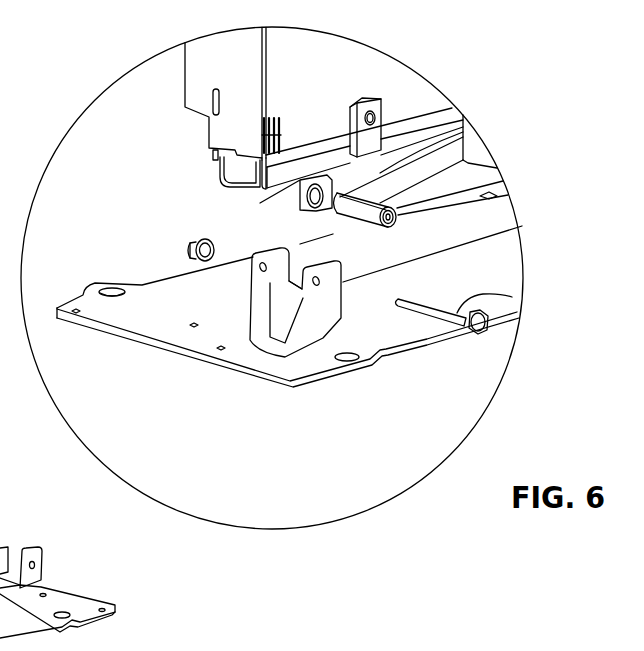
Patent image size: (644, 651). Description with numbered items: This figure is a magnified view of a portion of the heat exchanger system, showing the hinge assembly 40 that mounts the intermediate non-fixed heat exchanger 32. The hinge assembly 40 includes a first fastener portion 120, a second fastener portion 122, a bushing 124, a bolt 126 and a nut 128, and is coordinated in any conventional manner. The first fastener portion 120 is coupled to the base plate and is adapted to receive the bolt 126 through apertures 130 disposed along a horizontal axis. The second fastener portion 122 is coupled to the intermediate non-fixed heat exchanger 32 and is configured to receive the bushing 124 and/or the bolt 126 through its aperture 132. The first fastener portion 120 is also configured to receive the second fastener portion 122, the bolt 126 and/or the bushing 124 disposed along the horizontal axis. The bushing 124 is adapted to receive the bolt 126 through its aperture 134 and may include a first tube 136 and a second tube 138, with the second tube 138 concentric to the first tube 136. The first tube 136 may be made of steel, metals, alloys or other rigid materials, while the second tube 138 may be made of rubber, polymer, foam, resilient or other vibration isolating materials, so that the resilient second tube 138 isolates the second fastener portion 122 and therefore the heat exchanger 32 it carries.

The hinge assembly 40 is at (127, 149).
The intermediate non-fixed heat exchanger 32 is at (352, 63).
The first fastener portion 120 is at (522, 226).
The second fastener portion 122 is at (463, 122).
The bushing 124 is at (470, 158).
The bolt 126 is at (510, 296).
The nut 128 is at (188, 244).
The apertures 130 is at (262, 271).
The aperture 132 is at (384, 171).
The aperture 134 is at (484, 185).
The first tube 136 is at (387, 223).
The second tube 138 is at (353, 212).